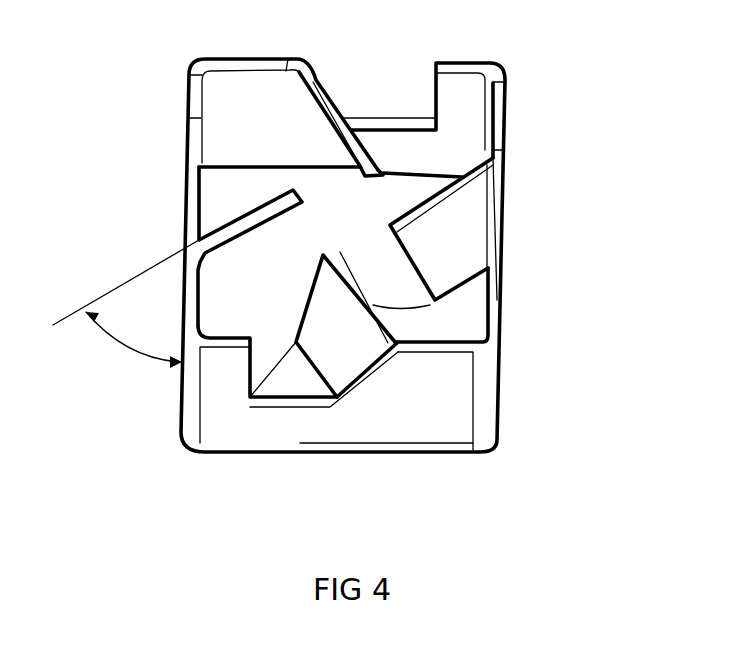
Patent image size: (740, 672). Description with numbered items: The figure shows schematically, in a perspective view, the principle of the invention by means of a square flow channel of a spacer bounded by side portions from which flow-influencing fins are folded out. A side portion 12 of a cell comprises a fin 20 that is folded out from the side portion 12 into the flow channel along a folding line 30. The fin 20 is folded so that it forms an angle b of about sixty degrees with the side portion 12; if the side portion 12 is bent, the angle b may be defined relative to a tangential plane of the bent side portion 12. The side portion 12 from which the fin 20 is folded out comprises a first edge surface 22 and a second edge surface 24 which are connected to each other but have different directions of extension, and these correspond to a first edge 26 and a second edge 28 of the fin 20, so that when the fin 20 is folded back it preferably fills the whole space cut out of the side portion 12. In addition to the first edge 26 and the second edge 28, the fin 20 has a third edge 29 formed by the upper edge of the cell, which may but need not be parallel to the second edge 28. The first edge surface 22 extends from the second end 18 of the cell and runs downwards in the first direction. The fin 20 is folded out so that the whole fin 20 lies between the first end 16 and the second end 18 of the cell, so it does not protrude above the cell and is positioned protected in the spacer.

The side portion 12 is at (427, 398).
The first end 16 is at (480, 453).
The second end 18 is at (487, 300).
The fin 20 is at (352, 122).
The first edge surface 22 is at (242, 387).
The second edge surface 24 is at (332, 425).
The first edge 26 is at (312, 285).
The second edge 28 is at (335, 375).
The third edge 29 is at (373, 305).
The folding line 30 is at (372, 370).
The angle b is at (126, 304).